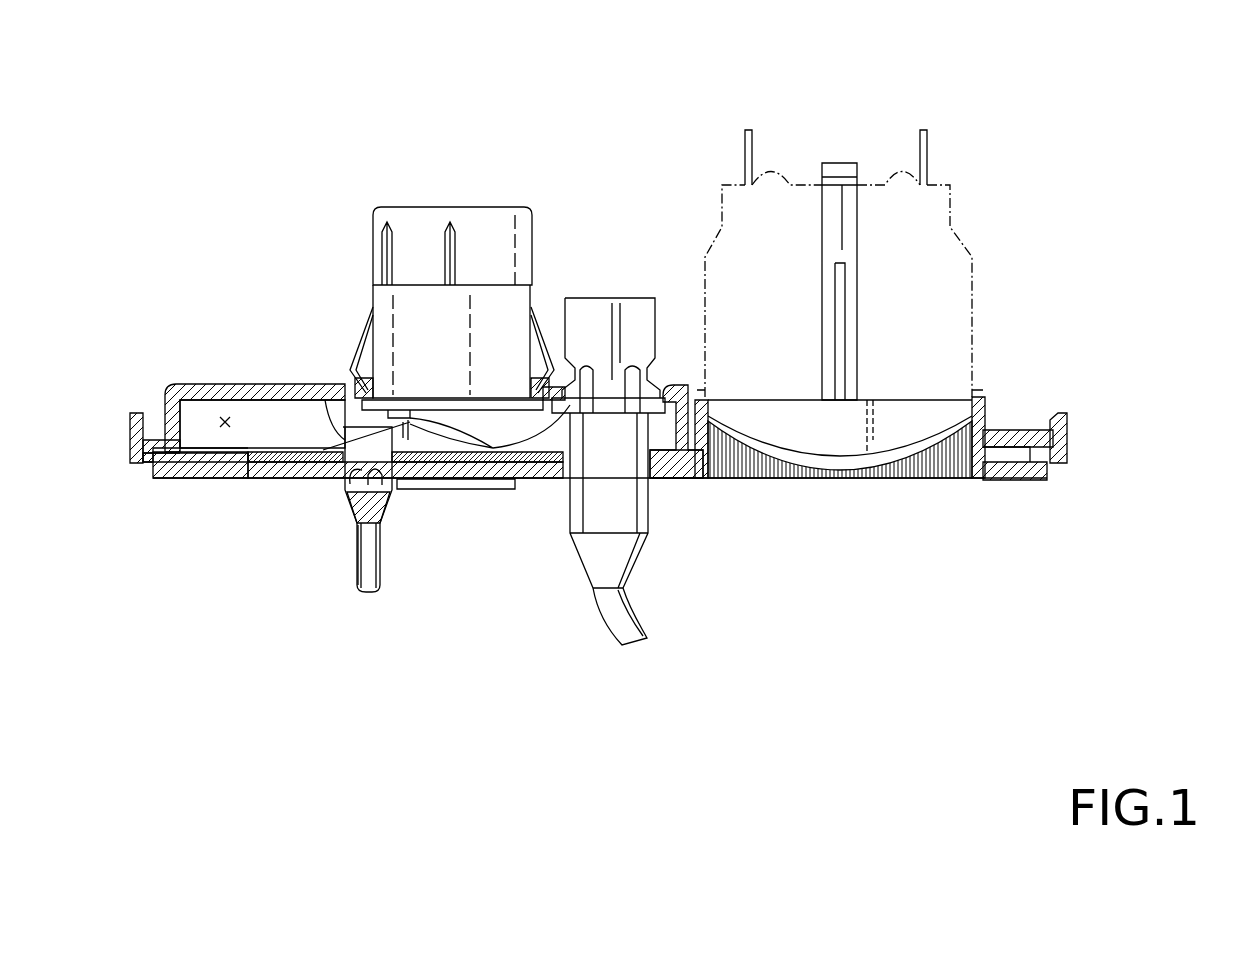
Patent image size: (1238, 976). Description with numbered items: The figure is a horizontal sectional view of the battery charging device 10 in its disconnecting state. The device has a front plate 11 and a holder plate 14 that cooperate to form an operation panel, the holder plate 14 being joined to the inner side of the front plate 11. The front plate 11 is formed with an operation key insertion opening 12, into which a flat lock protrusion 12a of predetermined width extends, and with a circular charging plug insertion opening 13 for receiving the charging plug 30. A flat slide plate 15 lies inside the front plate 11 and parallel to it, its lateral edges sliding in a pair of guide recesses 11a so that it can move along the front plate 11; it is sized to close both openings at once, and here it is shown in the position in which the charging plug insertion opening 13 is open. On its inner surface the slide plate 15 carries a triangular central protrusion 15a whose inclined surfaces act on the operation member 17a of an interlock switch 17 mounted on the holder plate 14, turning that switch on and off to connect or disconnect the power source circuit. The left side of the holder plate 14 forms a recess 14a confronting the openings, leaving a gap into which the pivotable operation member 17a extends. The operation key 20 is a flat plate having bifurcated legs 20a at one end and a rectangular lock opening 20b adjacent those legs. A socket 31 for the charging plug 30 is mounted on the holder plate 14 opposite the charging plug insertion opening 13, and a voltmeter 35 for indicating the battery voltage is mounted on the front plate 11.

The battery charging device 10 is at (543, 560).
The front plate 11 is at (217, 478).
The guide recesses 11a is at (195, 485).
The operation key insertion opening 12 is at (347, 488).
The lock protrusion 12a is at (450, 489).
The charging plug insertion opening 13 is at (645, 537).
The holder plate 14 is at (258, 387).
The recess 14a is at (227, 387).
The slide plate 15 is at (493, 489).
The central protrusion 15a is at (408, 405).
The interlock switch 17 is at (482, 300).
The operation member 17a is at (565, 298).
The operation key 20 is at (362, 562).
The bifurcated legs 20a is at (332, 418).
The lock opening 20b is at (390, 490).
The charging plug 30 is at (640, 490).
The socket 31 is at (613, 297).
The voltmeter 35 is at (923, 225).